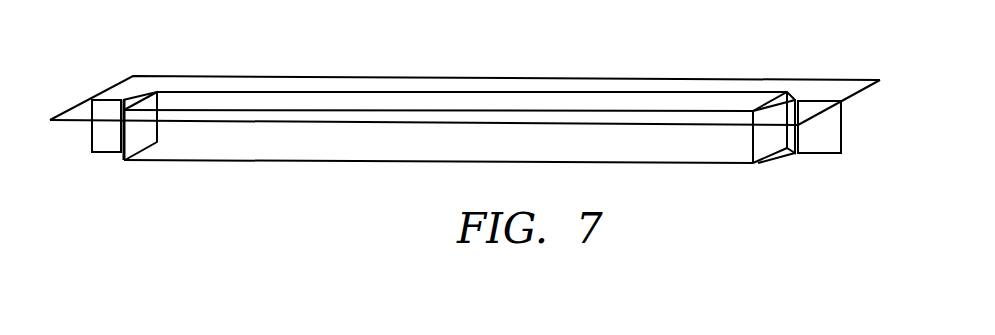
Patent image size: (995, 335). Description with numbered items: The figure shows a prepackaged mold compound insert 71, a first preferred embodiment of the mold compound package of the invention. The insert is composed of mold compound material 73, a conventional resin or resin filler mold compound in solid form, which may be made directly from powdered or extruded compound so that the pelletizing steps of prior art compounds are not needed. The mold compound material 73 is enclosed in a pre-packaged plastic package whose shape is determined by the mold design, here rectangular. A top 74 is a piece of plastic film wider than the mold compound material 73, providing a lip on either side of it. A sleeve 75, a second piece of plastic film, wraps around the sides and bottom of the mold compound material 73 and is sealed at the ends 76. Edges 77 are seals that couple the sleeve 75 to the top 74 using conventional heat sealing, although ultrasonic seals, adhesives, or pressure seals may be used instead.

The prepackaged mold compound insert 71 is at (247, 70).
The mold compound material 73 is at (389, 172).
The top 74 is at (833, 90).
The sleeve 75 is at (819, 163).
The ends 76 is at (842, 127).
The edges 77 is at (106, 126).